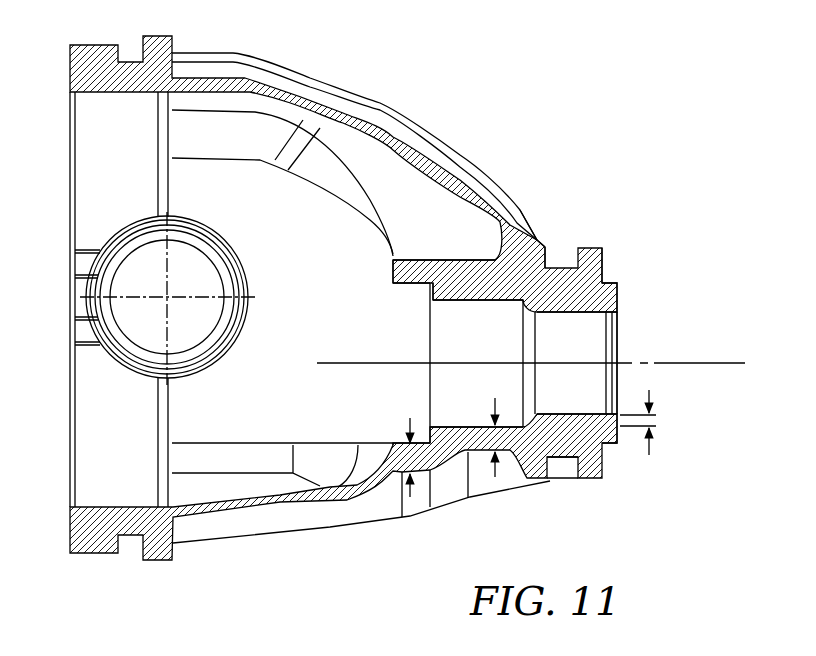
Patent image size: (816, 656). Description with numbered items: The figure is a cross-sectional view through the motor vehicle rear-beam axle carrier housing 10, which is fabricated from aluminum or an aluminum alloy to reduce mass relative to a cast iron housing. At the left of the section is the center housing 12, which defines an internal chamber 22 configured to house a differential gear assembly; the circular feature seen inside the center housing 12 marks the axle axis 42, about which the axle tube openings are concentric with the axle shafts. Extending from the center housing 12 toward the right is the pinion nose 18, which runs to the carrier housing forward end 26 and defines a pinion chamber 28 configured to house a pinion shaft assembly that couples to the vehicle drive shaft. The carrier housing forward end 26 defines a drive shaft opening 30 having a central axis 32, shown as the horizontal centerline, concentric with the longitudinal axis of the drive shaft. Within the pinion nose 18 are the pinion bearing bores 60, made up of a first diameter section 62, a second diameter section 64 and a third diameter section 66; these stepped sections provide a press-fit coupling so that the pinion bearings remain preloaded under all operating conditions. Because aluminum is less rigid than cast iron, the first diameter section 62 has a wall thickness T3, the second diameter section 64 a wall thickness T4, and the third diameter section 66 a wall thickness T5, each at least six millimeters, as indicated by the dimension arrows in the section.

The axle carrier housing 10 is at (565, 55).
The center housing 12 is at (326, 68).
The pinion nose 18 is at (547, 244).
The internal chamber 22 is at (302, 339).
The carrier housing forward end 26 is at (620, 375).
The pinion chamber 28 is at (489, 346).
The drive shaft opening 30 is at (613, 276).
The central axis 32 is at (715, 363).
The axle axis 42 is at (170, 295).
The pinion bearing bores 60 is at (608, 338).
The first diameter section 62 is at (567, 420).
The second diameter section 64 is at (536, 236).
The third diameter section 66 is at (412, 276).
The wall thickness T3 is at (652, 420).
The wall thickness T4 is at (490, 455).
The wall thickness T5 is at (407, 447).